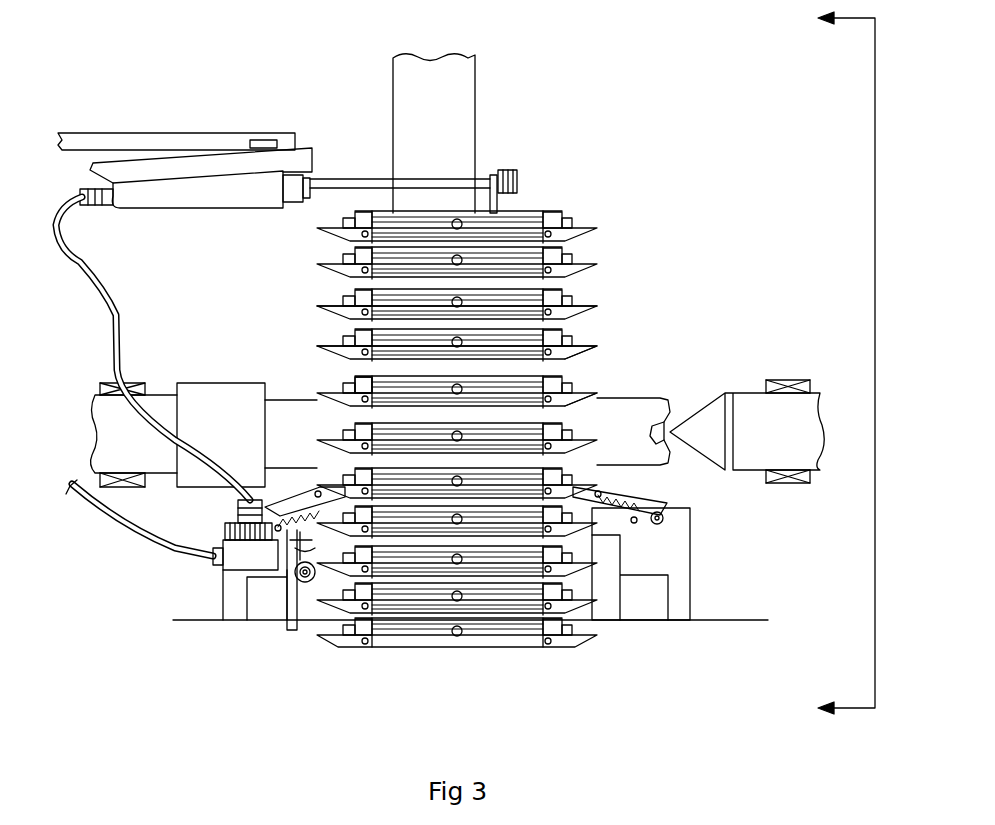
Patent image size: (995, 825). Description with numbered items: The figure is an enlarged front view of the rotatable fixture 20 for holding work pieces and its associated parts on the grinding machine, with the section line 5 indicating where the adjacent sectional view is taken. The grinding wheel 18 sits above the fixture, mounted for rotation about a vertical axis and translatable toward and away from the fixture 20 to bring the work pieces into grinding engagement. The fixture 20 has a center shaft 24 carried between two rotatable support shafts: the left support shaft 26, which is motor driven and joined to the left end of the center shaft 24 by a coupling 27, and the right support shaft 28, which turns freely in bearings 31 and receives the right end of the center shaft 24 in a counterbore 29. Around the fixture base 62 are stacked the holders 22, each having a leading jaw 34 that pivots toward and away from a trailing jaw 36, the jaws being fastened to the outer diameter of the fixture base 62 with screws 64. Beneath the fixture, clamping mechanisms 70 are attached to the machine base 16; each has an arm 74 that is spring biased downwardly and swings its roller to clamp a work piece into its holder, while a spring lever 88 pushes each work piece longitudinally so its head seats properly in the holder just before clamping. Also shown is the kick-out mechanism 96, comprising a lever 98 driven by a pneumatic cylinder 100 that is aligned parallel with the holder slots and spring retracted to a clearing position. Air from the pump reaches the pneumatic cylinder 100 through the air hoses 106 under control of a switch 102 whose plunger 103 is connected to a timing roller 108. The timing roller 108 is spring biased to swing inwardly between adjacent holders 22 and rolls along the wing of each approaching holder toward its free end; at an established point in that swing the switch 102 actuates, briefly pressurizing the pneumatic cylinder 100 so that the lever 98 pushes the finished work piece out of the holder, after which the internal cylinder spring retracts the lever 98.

The section line 5- 5 is at (837, 366).
The base 16 is at (750, 618).
The grinding wheel 18 is at (475, 118).
The fixture 20 is at (555, 668).
The holder 22 is at (494, 446).
The center shaft 24 is at (640, 398).
The left support shaft 26 is at (165, 395).
The coupling 27 is at (240, 383).
The right support shaft 28 is at (738, 393).
The counterbore 29 is at (665, 432).
The bearings 31 is at (107, 383).
The leading jaw 34 is at (600, 400).
The trailing jaw 36 is at (355, 385).
The fixture base 62 is at (600, 358).
The screws 64 is at (600, 300).
The clamping mechanism 70 is at (192, 607).
The arm 74 is at (660, 505).
The spring lever 88 is at (620, 500).
The kick-out mechanism 96 is at (485, 178).
The lever 98 is at (500, 203).
The pneumatic cylinder 100 is at (193, 208).
The switch 102 is at (215, 545).
The plunger 103 is at (285, 560).
The air hoses 106 is at (120, 300).
The timing roller 108 is at (305, 584).